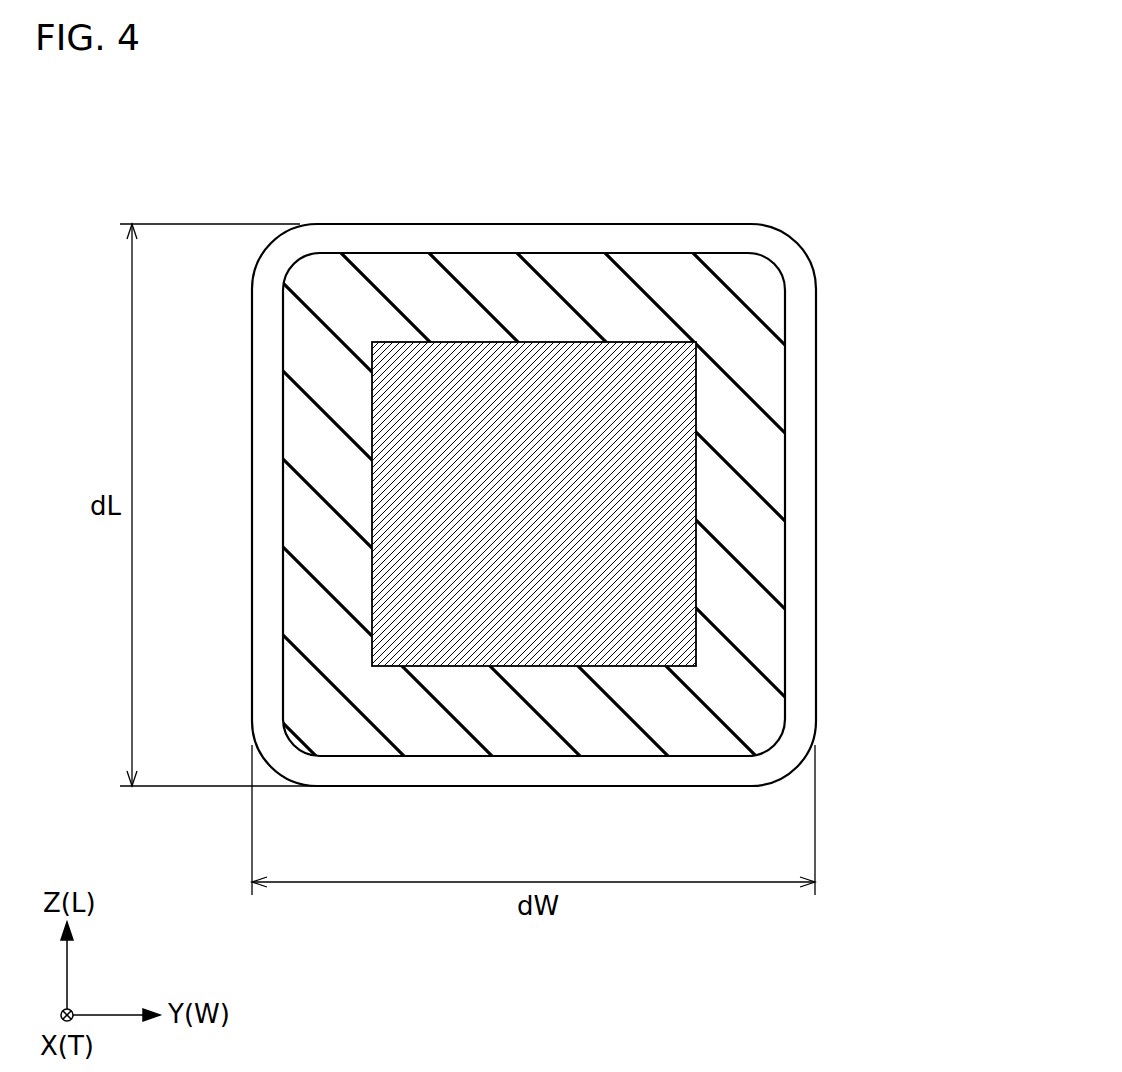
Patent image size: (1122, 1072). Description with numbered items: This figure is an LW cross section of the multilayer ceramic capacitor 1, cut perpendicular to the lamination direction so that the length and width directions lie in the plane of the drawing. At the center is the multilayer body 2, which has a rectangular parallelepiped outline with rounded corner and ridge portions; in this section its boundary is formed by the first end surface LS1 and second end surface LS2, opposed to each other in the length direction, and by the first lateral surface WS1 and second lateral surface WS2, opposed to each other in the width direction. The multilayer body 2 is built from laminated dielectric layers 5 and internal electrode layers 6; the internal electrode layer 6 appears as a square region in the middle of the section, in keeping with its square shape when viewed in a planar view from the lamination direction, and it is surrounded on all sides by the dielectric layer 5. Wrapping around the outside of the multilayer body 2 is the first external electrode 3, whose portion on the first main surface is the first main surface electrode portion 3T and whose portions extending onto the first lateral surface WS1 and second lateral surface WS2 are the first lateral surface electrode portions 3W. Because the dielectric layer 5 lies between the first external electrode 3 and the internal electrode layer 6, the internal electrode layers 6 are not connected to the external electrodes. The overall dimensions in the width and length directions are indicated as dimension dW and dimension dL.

The multilayer ceramic capacitor 1 is at (765, 160).
The multilayer body 2 is at (672, 253).
The first external electrode 3 is at (793, 243).
The first main surface electrode portion 3T is at (382, 222).
The first lateral surface electrode portion 3W is at (252, 662).
The dielectric layer 5 is at (623, 307).
The internal electrode layer 6 is at (468, 376).
The first end surface LS1 is at (433, 760).
The second end surface LS2 is at (560, 253).
The first lateral surface WS1 is at (283, 513).
The second lateral surface WS2 is at (785, 513).